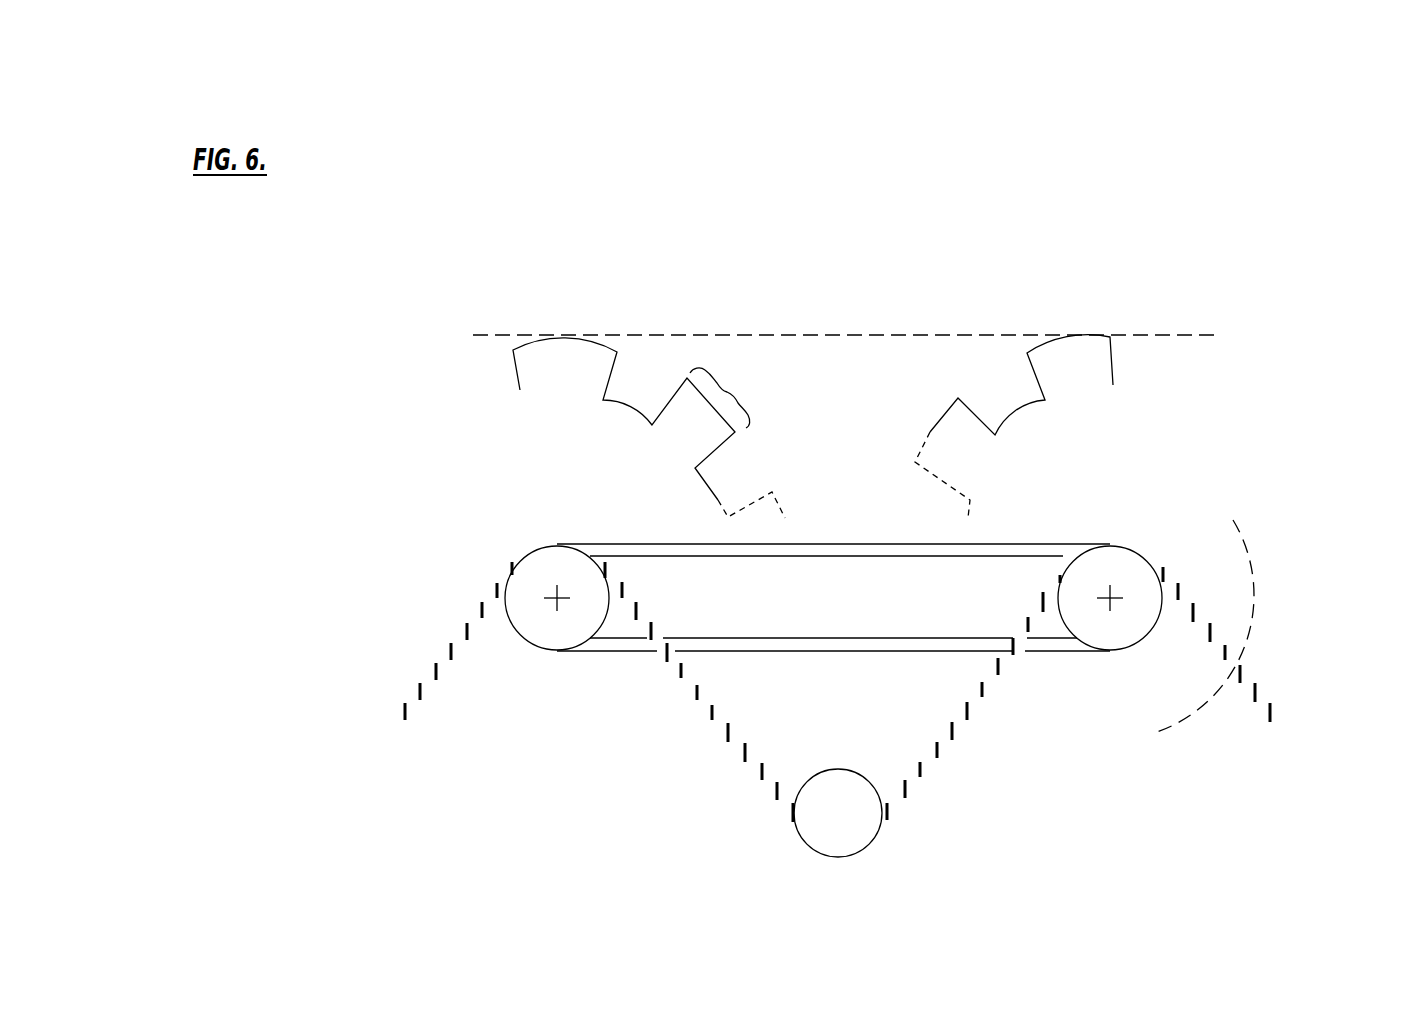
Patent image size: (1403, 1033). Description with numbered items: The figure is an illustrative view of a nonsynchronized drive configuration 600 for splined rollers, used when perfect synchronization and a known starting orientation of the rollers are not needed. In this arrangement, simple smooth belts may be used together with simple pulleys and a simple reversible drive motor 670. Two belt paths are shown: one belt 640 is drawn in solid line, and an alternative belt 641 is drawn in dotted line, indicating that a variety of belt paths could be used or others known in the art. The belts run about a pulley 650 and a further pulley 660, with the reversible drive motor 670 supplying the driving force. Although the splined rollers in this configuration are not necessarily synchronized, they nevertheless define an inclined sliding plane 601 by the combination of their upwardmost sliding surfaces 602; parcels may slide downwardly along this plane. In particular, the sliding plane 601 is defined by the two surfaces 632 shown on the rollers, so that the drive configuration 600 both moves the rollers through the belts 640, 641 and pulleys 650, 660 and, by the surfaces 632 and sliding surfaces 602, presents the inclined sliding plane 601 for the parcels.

The nonsynchronized drive configuration 600 is at (915, 107).
The inclined sliding plane 601 is at (757, 335).
The upwardmost sliding surfaces 602 is at (727, 398).
The surfaces 632 is at (571, 360).
The belt 640 is at (885, 540).
The belt 641 is at (465, 625).
The pulley 650 is at (533, 567).
The pulley 660 is at (833, 832).
The reversible drive motor 670 is at (1230, 567).